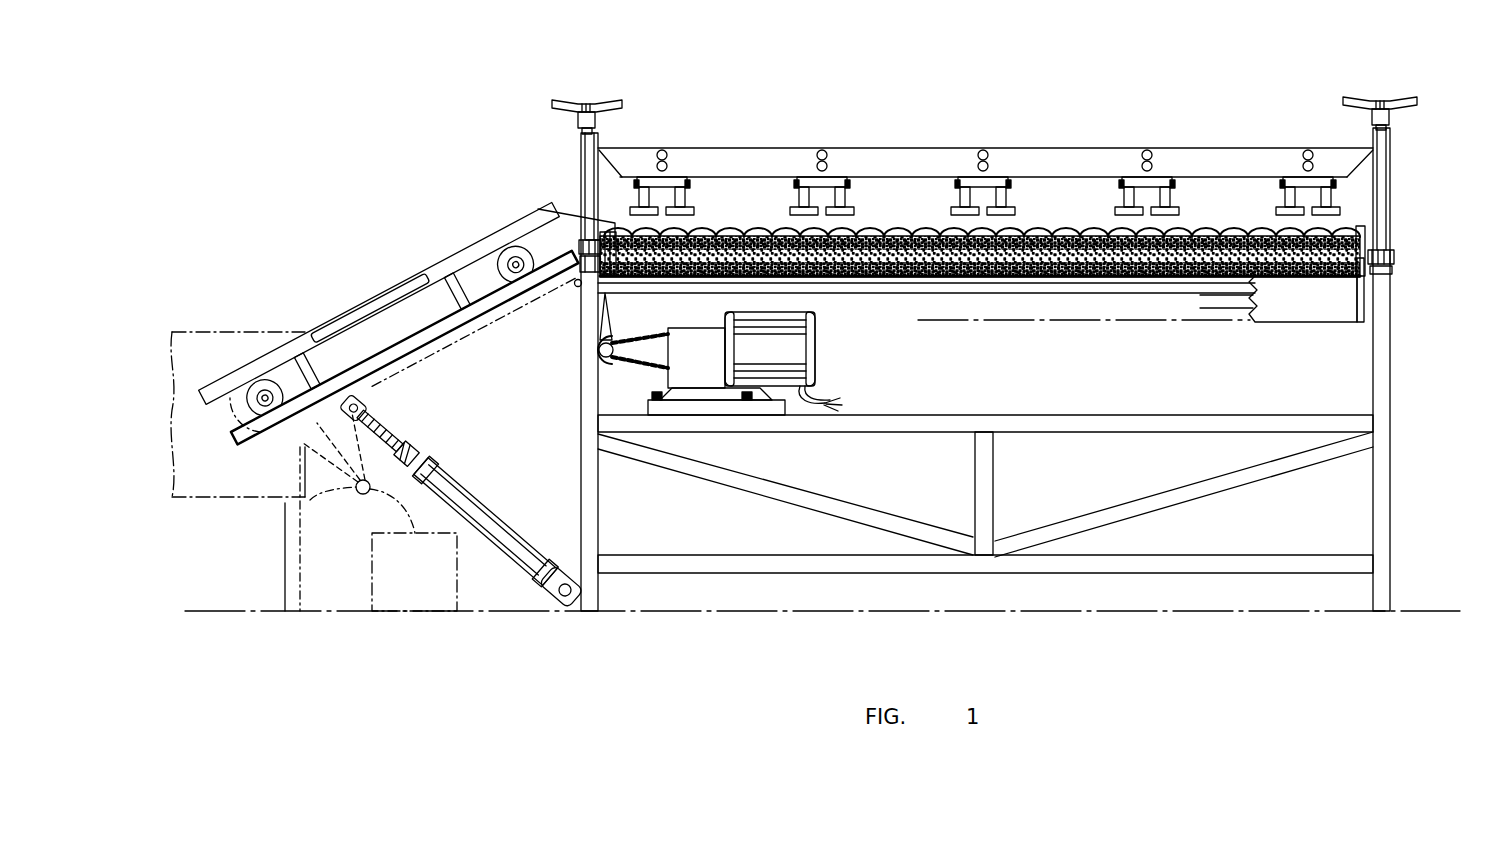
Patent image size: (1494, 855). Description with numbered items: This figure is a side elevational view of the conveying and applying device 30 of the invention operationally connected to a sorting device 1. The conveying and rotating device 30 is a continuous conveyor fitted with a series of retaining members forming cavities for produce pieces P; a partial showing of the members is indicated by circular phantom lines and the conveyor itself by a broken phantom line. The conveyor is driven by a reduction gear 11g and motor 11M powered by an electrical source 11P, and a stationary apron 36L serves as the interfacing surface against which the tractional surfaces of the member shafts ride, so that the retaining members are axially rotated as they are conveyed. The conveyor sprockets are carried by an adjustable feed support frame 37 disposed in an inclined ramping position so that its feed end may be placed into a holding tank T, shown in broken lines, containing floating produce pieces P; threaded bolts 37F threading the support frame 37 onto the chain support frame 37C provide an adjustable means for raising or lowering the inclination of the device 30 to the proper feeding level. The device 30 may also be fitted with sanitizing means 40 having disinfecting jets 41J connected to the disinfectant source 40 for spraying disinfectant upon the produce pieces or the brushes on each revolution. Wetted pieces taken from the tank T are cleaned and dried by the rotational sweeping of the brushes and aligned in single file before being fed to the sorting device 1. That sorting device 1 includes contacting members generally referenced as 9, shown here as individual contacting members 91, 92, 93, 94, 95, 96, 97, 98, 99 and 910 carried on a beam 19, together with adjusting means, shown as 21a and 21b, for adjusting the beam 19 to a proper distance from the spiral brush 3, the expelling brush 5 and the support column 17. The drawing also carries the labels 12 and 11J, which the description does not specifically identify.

The sorting device 1 is at (1410, 300).
The spiral brush 3 is at (893, 234).
The expelling brush 5 is at (970, 278).
The contacting members 9 is at (1345, 200).
The contacting member 91 is at (640, 205).
The contacting member 92 is at (688, 203).
The contacting member 93 is at (800, 205).
The contacting member 94 is at (845, 203).
The contacting member 95 is at (963, 203).
The contacting member 96 is at (1003, 203).
The contacting member 97 is at (1126, 203).
The contacting member 98 is at (1168, 203).
The contacting member 99 is at (1288, 205).
The contacting member 910 is at (1328, 203).
The journal bearings 11J is at (584, 238).
The reduction gear 11g is at (714, 370).
The motor 11M is at (786, 360).
The electrical source 11P is at (815, 388).
The frame 12 is at (598, 522).
The support column 17 is at (1392, 222).
The beam 19 is at (903, 150).
The adjusting means 21a is at (1380, 96).
The adjusting means 21b is at (584, 98).
The conveying and rotating device 30 is at (305, 317).
The stationary apron 36L is at (372, 312).
The adjustable feed support frame 37 is at (498, 522).
The chain support frame 37C is at (448, 342).
The threaded bolts 37F is at (422, 456).
The sanitizing means 40 is at (340, 497).
The disinfecting jets 41J is at (333, 497).
The holding tank T is at (216, 505).